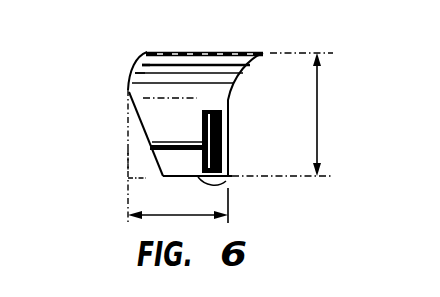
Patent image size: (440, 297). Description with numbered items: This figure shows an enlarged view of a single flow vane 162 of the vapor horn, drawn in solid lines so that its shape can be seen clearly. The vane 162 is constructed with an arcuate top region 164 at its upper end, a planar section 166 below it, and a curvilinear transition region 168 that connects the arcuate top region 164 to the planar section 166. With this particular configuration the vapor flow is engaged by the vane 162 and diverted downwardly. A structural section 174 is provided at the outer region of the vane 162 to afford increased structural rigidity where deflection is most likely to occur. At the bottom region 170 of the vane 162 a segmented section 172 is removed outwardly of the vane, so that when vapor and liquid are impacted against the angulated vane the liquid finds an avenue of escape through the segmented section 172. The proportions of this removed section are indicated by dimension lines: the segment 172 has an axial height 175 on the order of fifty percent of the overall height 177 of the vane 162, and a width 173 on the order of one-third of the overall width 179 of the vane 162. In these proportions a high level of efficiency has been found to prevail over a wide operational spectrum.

The flow vane 162 is at (227, 91).
The arcuate top region 164 is at (245, 52).
The planar section 166 is at (158, 107).
The transition region 168 is at (130, 86).
The bottom region of the vane 170 is at (224, 182).
The segmented section 172 is at (126, 160).
The width of segmented section 173 is at (130, 178).
The structural section 174 is at (228, 143).
The axial height of segmented section 175 is at (147, 149).
The height of the vane 177 is at (318, 112).
The width of the vane 179 is at (195, 208).